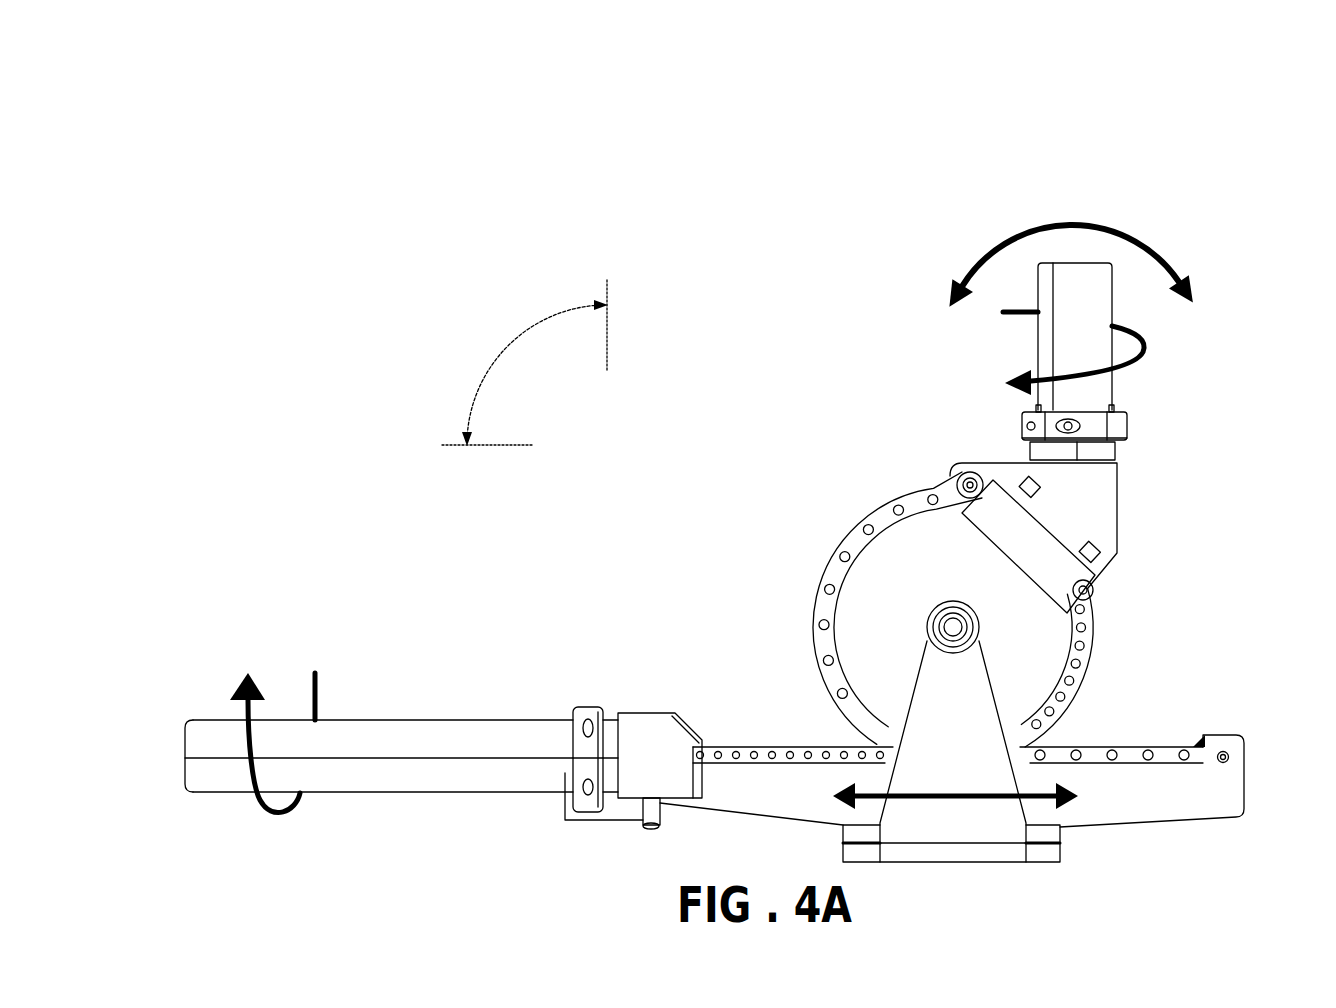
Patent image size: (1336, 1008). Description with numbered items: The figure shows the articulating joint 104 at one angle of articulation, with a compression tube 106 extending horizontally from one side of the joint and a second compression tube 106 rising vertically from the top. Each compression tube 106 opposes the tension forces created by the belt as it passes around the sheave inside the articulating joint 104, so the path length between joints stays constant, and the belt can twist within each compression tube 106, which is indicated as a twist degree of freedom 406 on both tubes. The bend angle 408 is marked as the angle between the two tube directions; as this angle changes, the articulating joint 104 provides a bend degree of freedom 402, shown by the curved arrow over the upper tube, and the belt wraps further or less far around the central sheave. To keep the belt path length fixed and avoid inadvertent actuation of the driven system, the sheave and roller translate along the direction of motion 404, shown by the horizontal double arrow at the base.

The articulating joint 104 is at (337, 57).
The compression tube 106 is at (1060, 368).
The bend degree of freedom 402 is at (985, 262).
The direction of motion 404 is at (990, 797).
The twist degree of freedom 406 is at (730, 562).
The bend angle 408 is at (519, 363).